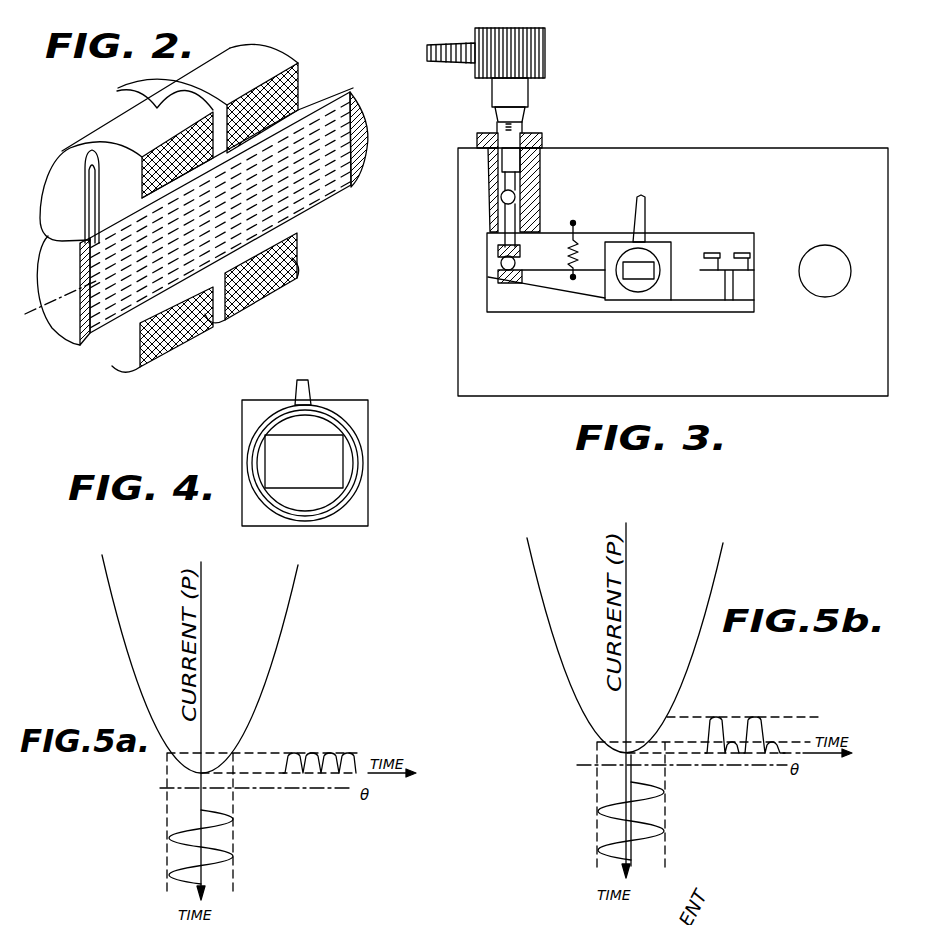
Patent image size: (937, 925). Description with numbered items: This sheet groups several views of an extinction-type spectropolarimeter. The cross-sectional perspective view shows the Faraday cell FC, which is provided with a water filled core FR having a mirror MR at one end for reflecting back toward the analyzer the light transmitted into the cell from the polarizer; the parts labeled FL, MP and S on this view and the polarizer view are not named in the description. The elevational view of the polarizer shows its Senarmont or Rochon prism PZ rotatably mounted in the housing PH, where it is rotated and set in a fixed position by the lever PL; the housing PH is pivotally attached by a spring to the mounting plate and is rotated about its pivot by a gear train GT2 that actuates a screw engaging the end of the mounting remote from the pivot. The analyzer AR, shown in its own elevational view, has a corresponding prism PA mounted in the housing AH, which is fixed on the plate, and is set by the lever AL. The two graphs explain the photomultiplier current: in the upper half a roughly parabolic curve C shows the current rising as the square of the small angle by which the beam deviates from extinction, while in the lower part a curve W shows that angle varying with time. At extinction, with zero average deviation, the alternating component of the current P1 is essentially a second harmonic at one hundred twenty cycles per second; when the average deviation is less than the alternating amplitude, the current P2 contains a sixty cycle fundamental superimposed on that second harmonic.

In FIG. 2, the mirror MR is at (367, 135).
In FIG. 2, the Faraday cell FC is at (327, 92).
In FIG. 2, the flux lines / pole pieces FL is at (159, 94).
In FIG. 2, the water filled core FR is at (93, 337).
In FIG. 3, the mounting plate MP is at (690, 147).
In FIG. 3, the gear train GT2 is at (475, 42).
In FIG. 3, the spindle S is at (513, 162).
In FIG. 3, the polarizer housing PH is at (663, 247).
In FIG. 3, the polarizer prism PZ is at (638, 271).
In FIG. 3, the polarizer lever PL is at (643, 208).
In FIG. 4, the analyzer housing AH is at (358, 428).
In FIG. 4, the analyzer prism PA is at (304, 461).
In FIG. 4, the analyzer lever AL is at (312, 385).
In FIG. 4, the analyzer AR is at (376, 477).
In FIG. 5A, the current curve C is at (262, 682).
In FIG. 5B, the current curve C is at (718, 580).
In FIG. 5A, the photomultiplier current at extinction P1 is at (331, 753).
In FIG. 5B, the photomultiplier current at small deviation P2 is at (766, 722).
In FIG. 5A, the deviation curve W is at (185, 828).
In FIG. 5B, the deviation curve W is at (656, 805).